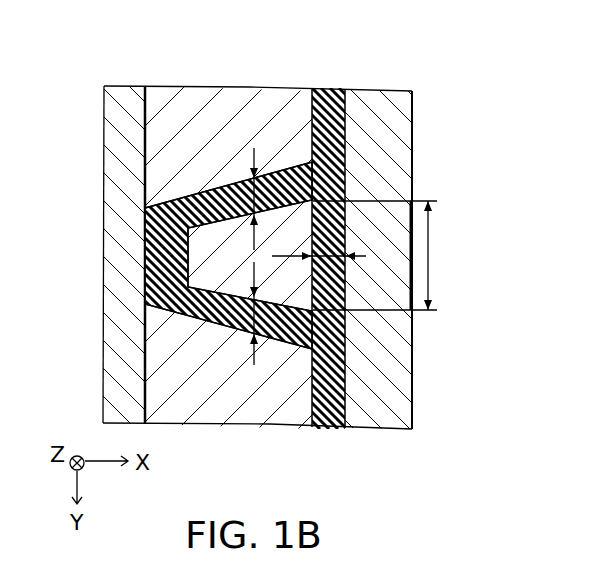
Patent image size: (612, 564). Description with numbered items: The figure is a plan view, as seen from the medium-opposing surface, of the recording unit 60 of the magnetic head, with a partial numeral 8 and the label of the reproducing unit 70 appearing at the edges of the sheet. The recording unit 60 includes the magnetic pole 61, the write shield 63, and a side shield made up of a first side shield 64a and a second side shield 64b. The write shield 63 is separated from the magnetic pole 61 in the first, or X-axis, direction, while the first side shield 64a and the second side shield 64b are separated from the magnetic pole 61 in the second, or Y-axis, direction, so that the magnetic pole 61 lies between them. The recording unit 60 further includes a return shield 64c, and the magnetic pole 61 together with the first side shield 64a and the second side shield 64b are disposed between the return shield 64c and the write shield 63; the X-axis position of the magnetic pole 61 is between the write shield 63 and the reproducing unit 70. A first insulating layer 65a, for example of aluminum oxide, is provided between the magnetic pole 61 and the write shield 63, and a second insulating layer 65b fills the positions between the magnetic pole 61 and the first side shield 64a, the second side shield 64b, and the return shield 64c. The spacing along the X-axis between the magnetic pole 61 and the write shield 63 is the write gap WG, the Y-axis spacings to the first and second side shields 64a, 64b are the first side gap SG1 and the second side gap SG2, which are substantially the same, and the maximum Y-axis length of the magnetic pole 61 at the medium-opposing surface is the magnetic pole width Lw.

The recording unit 60 is at (420, 72).
The magnetic pole 61 is at (284, 228).
The write shield 63 is at (377, 137).
The first side shield 64a is at (211, 380).
The second side shield 64b is at (187, 128).
The return shield 64c is at (132, 124).
The first insulating layer 65a is at (328, 137).
The second insulating layer 65b is at (162, 256).
The reproducing unit 70 is at (14, 41).
The magnetic head slider 8 is at (15, 454).
The first side gap SG1 is at (253, 307).
The second side gap SG2 is at (250, 192).
The write gap WG is at (321, 262).
The magnetic pole width Lw is at (391, 255).